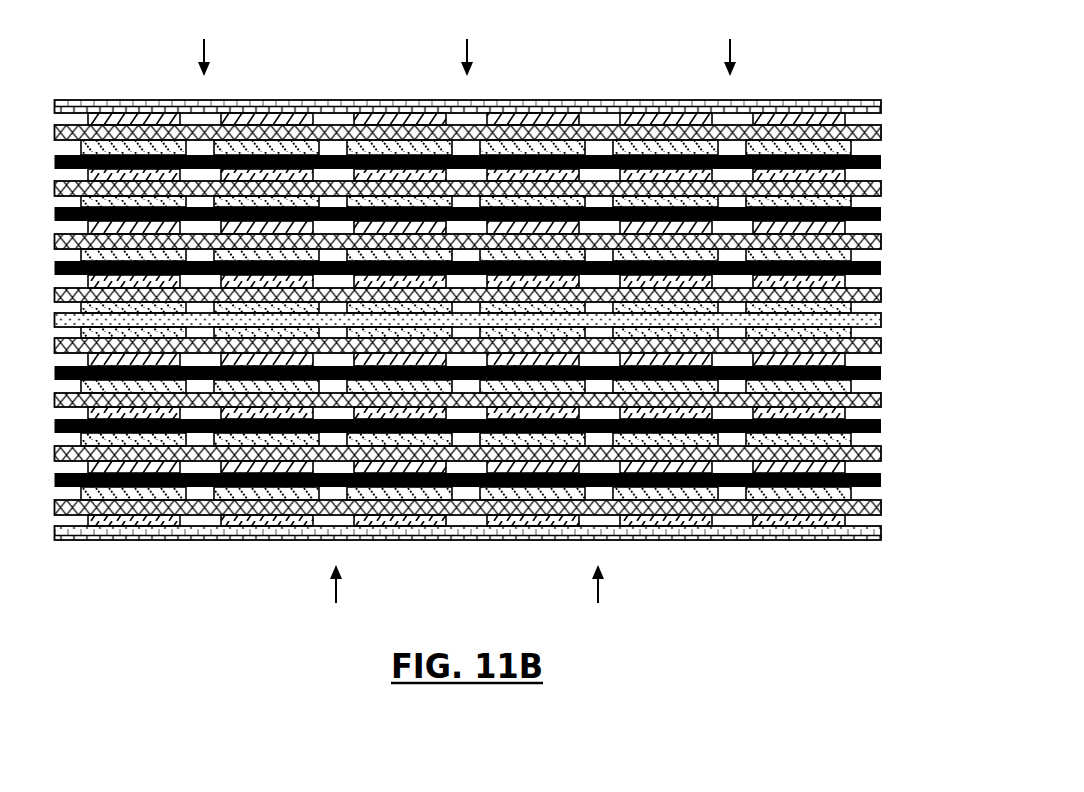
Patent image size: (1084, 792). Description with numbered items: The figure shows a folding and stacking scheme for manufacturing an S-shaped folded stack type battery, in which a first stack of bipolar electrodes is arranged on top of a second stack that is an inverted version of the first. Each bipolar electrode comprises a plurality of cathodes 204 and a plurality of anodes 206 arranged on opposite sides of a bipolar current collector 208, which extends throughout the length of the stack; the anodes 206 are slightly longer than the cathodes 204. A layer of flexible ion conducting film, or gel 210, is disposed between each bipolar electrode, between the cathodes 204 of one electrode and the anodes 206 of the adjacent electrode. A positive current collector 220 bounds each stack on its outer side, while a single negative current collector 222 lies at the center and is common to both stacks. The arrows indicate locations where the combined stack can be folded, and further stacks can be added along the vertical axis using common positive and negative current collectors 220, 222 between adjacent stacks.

The cathode 204 is at (837, 510).
The anode 206 is at (843, 435).
The bipolar current collector 208 is at (873, 148).
The flexible ion conducting film 210 is at (873, 232).
The positive current collector 220 is at (873, 95).
The negative current collector 222 is at (873, 310).